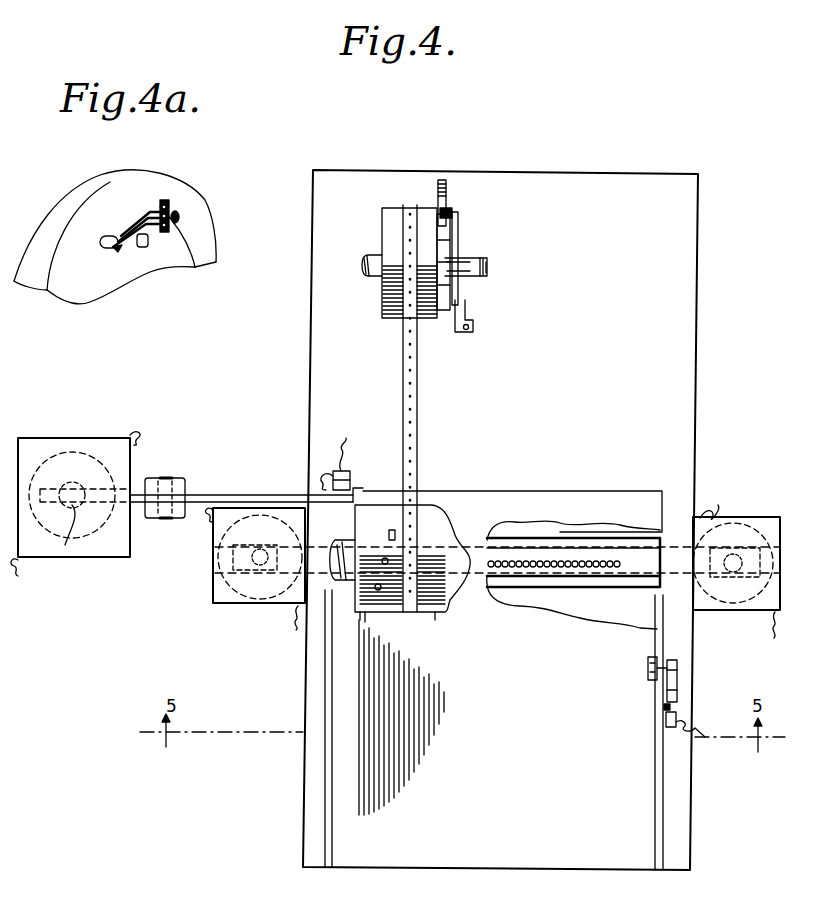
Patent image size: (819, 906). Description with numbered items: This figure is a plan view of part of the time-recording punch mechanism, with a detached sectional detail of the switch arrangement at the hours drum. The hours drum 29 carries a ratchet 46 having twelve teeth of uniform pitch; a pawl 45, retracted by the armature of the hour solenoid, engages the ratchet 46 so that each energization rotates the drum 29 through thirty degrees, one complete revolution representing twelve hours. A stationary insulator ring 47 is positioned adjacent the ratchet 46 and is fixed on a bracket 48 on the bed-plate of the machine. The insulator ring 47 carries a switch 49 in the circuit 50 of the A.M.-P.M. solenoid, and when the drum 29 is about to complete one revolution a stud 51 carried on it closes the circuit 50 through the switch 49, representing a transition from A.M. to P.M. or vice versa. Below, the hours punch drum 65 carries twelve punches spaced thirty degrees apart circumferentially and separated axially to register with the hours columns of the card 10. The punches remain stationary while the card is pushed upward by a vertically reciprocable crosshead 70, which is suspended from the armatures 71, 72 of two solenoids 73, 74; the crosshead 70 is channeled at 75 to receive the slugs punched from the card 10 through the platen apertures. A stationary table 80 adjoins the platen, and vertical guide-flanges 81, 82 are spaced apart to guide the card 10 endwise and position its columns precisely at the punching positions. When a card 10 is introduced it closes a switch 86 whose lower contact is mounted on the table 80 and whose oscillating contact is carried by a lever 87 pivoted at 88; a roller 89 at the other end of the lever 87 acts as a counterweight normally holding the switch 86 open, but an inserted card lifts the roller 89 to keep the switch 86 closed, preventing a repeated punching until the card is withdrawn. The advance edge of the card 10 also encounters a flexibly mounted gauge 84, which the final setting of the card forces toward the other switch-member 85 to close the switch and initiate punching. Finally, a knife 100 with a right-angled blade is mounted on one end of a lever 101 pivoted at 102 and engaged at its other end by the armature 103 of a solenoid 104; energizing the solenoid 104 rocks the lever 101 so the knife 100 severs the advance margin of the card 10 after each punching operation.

In FIG. 4, the card 10 is at (585, 491).
In FIG. 4A, the hours drum 29 is at (145, 188).
In FIG. 4, the hours drum 29 is at (382, 306).
In FIG. 4, the pawl 45 is at (440, 184).
In FIG. 4, the ratchet 46 is at (487, 268).
In FIG. 4A, the insulator ring 47 is at (199, 240).
In FIG. 4, the insulator ring 47 is at (458, 290).
In FIG. 4, the bracket 48 is at (473, 326).
In FIG. 4A, the switch 49 is at (150, 212).
In FIG. 4, the switch 49 is at (452, 224).
In FIG. 4A, the circuit 50 is at (184, 217).
In FIG. 4, the circuit 50 is at (450, 212).
In FIG. 4A, the stud 51 is at (143, 247).
In FIG. 4, the stud 51 is at (440, 222).
In FIG. 4, the hours punch drum 65 is at (444, 522).
In FIG. 4, the crosshead 70 is at (495, 561).
In FIG. 4, the armature 71 is at (266, 549).
In FIG. 4, the armature 72 is at (747, 540).
In FIG. 4, the solenoid 73 is at (270, 600).
In FIG. 4, the solenoid 74 is at (778, 517).
In FIG. 4, the channel 75 is at (634, 558).
In FIG. 4, the stationary table 80 is at (682, 457).
In FIG. 4, the guide-flange 81 is at (325, 682).
In FIG. 4, the guide-flange 82 is at (663, 795).
In FIG. 4, the gauge 84 is at (352, 485).
In FIG. 4, the switch-member 85 is at (352, 468).
In FIG. 4, the switch 86 is at (680, 714).
In FIG. 4, the lever 87 is at (665, 708).
In FIG. 4, the pivot 88 is at (680, 690).
In FIG. 4, the roller 89 is at (648, 670).
In FIG. 4, the knife 100 is at (358, 497).
In FIG. 4, the lever 101 is at (268, 485).
In FIG. 4, the pivot 102 is at (170, 478).
In FIG. 4, the armature 103 is at (65, 545).
In FIG. 4, the solenoid 104 is at (92, 440).